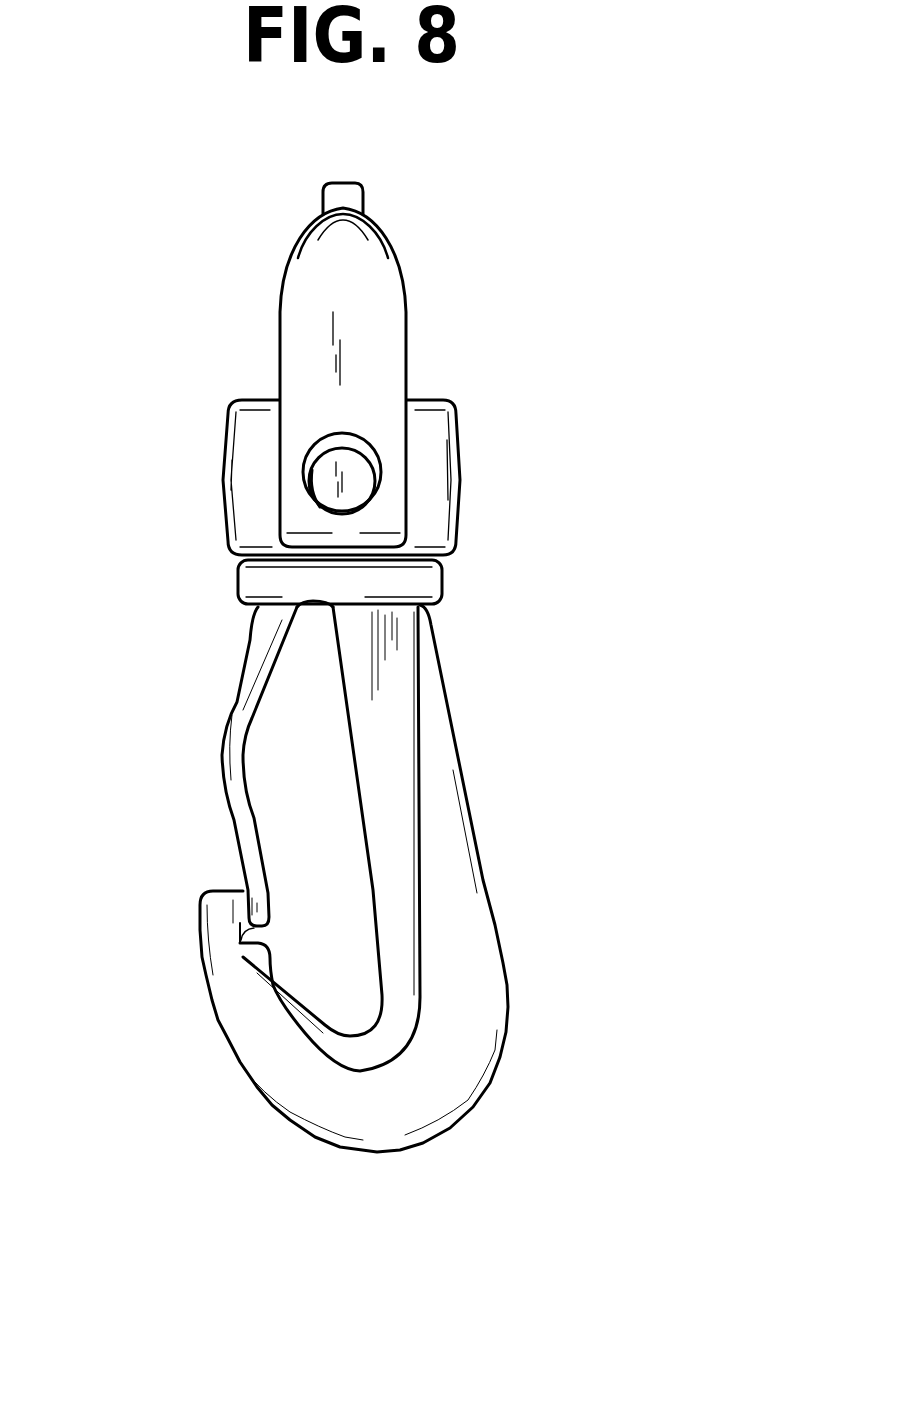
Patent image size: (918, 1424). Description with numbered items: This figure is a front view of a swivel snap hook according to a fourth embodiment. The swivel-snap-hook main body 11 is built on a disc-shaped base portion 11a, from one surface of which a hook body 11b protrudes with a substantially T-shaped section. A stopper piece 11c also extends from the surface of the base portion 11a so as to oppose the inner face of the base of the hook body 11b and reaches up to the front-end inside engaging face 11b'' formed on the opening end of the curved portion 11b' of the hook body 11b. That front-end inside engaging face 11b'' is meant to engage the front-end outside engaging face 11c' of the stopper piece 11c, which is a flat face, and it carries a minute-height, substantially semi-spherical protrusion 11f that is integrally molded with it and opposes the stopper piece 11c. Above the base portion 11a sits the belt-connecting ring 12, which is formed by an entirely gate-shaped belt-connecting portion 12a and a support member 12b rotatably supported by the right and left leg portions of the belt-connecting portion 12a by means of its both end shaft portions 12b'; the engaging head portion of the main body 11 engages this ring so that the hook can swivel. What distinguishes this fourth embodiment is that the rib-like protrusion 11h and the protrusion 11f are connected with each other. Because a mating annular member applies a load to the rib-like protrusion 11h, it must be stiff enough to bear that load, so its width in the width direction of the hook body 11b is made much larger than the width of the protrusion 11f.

The swivel-snap-hook main body 11 is at (527, 983).
The base portion 11a is at (417, 583).
The hook body 11b is at (406, 887).
The curved portion 11b' is at (370, 1162).
The front-end inside engaging face 11b'' is at (301, 943).
The stopper piece 11c is at (201, 766).
The front-end outside engaging face 11c' is at (185, 873).
The protrusion 11f is at (247, 930).
The rib-like protrusion 11h is at (262, 952).
The belt-connecting ring 12 is at (231, 262).
The belt-connecting portion 12a is at (404, 267).
The support member 12b is at (261, 477).
The end shaft portions 12b' is at (442, 473).